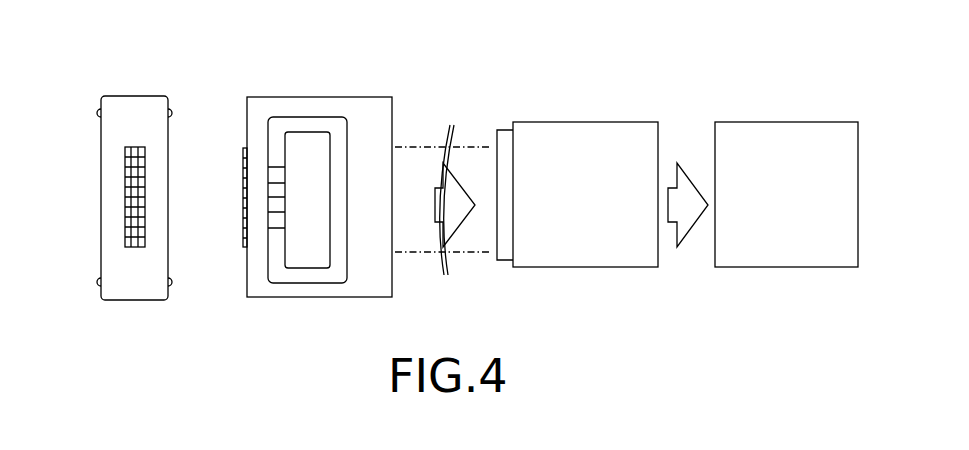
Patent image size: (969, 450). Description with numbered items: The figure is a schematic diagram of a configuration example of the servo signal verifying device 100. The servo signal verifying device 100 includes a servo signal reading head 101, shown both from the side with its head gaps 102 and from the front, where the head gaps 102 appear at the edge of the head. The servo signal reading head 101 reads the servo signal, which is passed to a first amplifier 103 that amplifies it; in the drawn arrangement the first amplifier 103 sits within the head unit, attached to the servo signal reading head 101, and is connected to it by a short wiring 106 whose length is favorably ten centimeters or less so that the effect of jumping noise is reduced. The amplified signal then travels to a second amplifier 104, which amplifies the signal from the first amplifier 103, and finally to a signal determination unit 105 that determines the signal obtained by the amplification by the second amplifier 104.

The servo signal verifying device 100 is at (505, 70).
The servo signal reading head 101 is at (101, 135).
The head gap 102 is at (125, 168).
The first amplifier 103 is at (312, 132).
The second amplifier 104 is at (590, 122).
The signal determination unit 105 is at (797, 122).
The wiring 106 is at (280, 166).